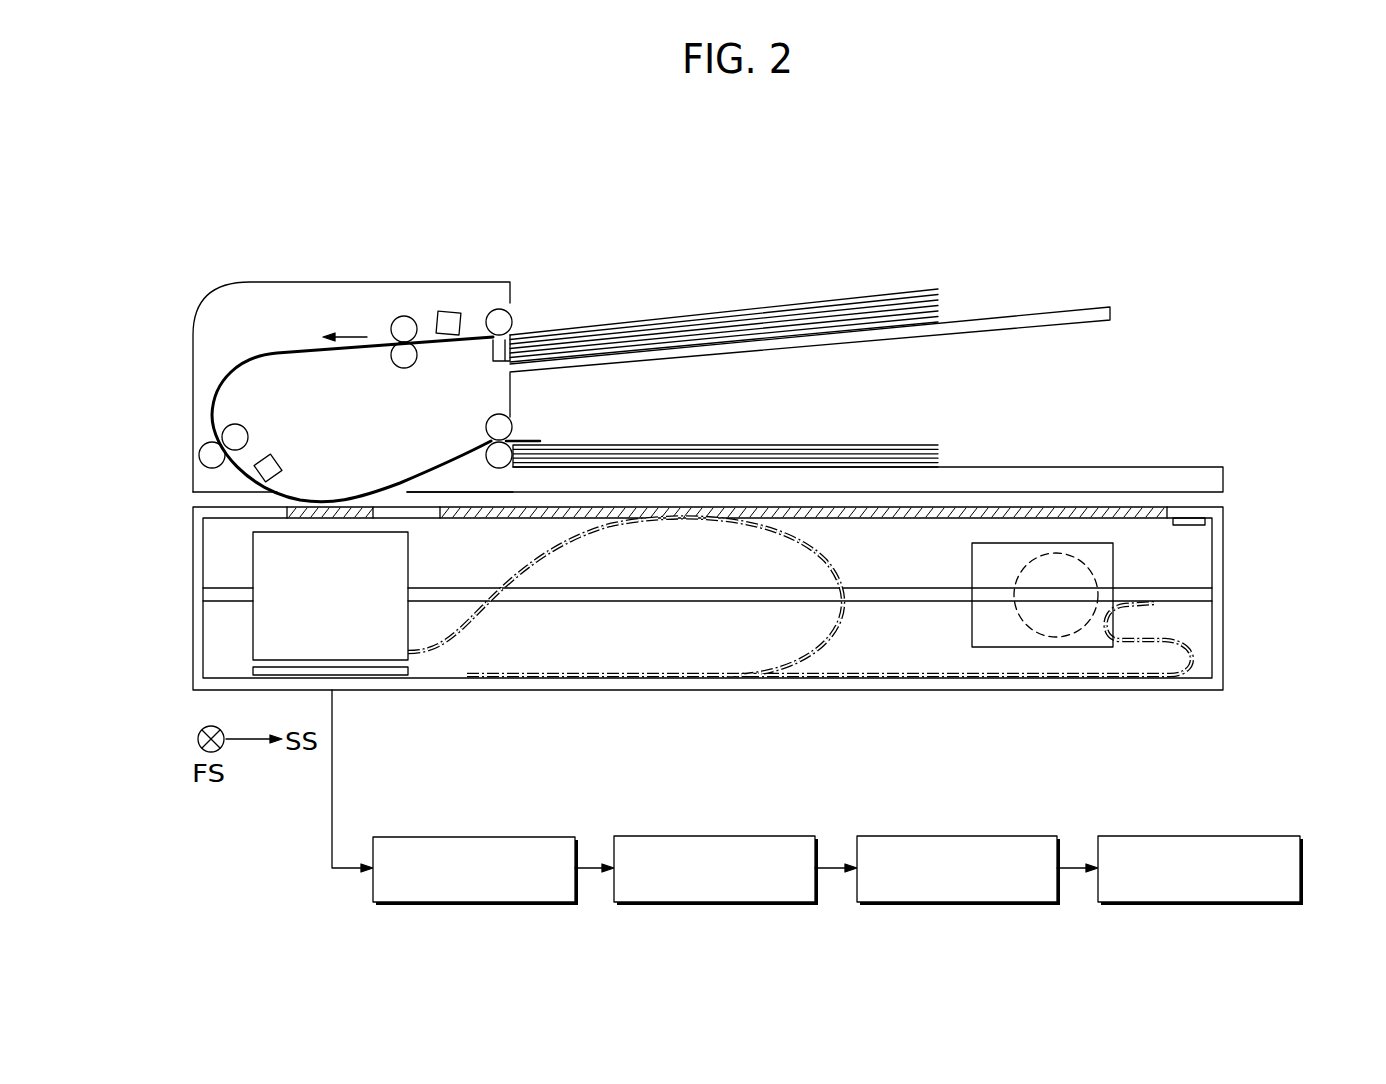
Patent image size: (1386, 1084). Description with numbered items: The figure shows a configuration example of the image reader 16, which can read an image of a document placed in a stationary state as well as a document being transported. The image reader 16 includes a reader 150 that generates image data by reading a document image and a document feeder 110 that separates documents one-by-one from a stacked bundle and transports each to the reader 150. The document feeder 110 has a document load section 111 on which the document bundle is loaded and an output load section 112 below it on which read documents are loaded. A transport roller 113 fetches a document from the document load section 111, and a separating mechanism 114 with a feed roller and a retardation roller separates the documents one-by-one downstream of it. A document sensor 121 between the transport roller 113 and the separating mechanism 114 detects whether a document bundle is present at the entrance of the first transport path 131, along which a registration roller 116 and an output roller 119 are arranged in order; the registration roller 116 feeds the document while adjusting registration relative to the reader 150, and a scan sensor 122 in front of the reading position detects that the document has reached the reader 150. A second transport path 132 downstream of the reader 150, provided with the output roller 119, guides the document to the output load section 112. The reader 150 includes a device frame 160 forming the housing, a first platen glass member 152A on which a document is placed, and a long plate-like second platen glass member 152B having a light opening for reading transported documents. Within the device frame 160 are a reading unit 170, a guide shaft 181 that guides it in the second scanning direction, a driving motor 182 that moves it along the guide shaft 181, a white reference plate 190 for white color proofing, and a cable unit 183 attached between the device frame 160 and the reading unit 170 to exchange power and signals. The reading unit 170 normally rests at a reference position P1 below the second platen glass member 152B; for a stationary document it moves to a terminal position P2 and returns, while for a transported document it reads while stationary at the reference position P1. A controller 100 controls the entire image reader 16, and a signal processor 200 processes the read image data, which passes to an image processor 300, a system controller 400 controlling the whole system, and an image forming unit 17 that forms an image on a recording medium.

The image reader 16 is at (870, 155).
The document feeder 110 is at (702, 256).
The document load section 111 is at (905, 343).
The output load section 112 is at (1040, 466).
The transport roller 113 is at (497, 310).
The separating mechanism 114 is at (397, 303).
The registration roller 116 is at (232, 436).
The output roller 119 is at (510, 426).
The document sensor 121 is at (448, 312).
The scan sensor 122 is at (262, 466).
The first transport path 131 is at (277, 352).
The second transport path 132 is at (538, 442).
The reader 150 is at (1282, 600).
The first platen glass member 152A is at (1122, 519).
The second platen glass member 152B is at (290, 514).
The device frame 160 is at (648, 692).
The reading unit 170 is at (253, 627).
The guide shaft 181 is at (890, 598).
The driving motor 182 is at (1057, 637).
The cable unit 183 is at (790, 655).
The white reference plate 190 is at (1185, 518).
The controller 100 is at (362, 680).
The signal processor 200 is at (541, 906).
The image processor 300 is at (773, 905).
The system controller 400 is at (1015, 905).
The image forming unit 17 is at (1255, 905).
The reference position P1 is at (457, 668).
The terminal position P2 is at (1158, 665).